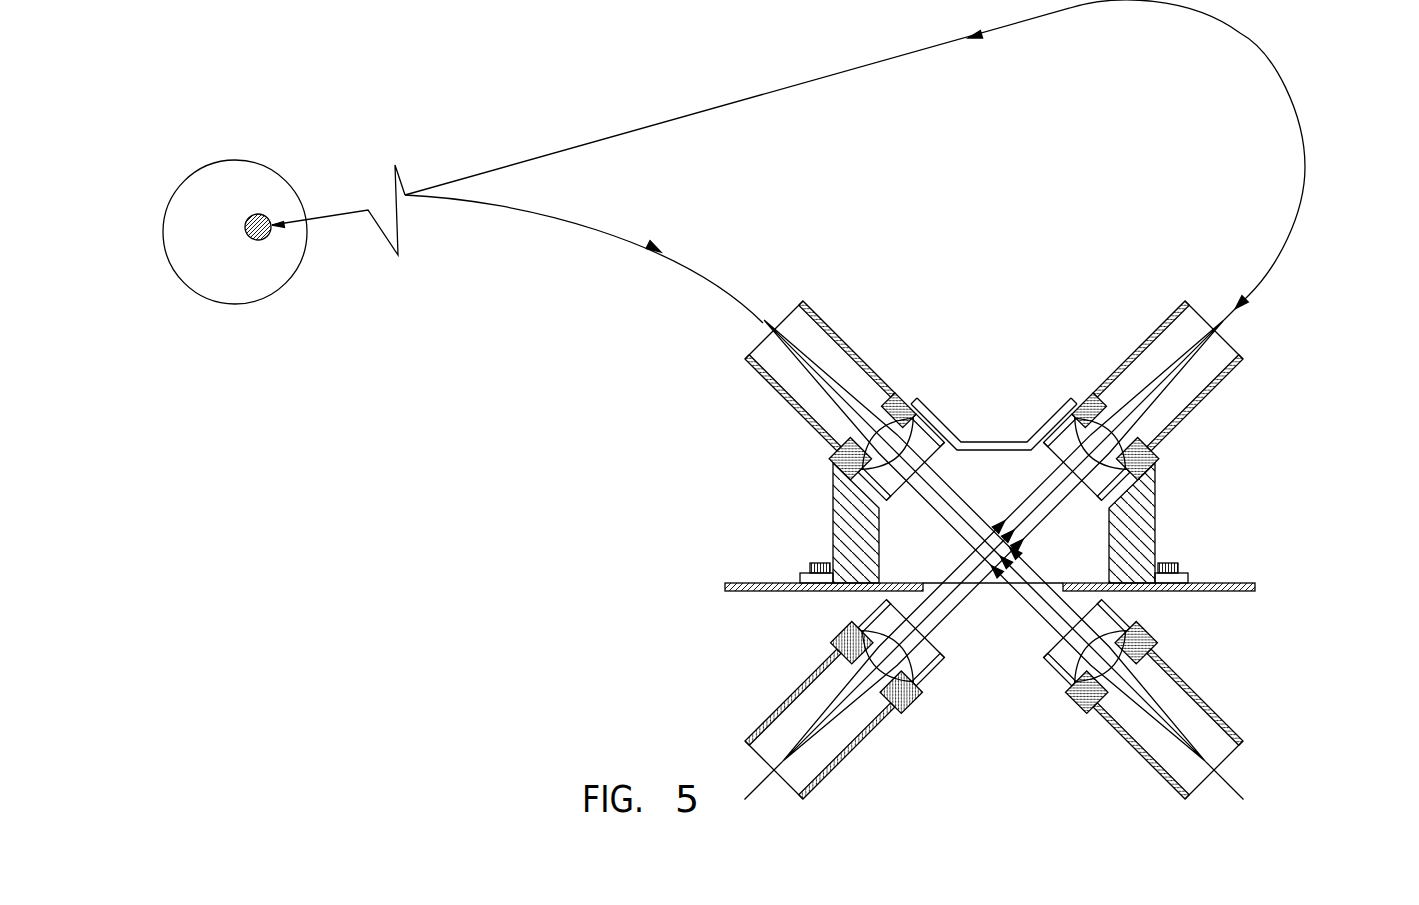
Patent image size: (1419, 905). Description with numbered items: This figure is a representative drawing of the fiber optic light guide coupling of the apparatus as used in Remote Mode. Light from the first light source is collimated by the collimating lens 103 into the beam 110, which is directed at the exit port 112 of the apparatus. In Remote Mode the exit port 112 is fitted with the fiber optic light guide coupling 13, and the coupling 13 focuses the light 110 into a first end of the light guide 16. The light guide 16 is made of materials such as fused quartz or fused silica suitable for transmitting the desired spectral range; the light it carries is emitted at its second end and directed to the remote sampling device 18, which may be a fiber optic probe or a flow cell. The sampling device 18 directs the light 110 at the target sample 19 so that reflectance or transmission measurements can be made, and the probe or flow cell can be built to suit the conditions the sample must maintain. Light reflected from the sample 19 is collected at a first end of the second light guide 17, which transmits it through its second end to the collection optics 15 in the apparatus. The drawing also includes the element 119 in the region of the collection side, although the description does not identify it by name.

The fiber optic light guide coupling 13 is at (1136, 525).
The collection optics 15 is at (1164, 678).
The light guide 16 is at (1285, 90).
The second light guide 17 is at (515, 203).
The remote sampling device 18 is at (184, 284).
The target sample 19 is at (262, 213).
The collimating lens 103 is at (893, 698).
The beam 110 is at (865, 719).
The exit port 112 is at (988, 588).
The lens 119 is at (1138, 650).